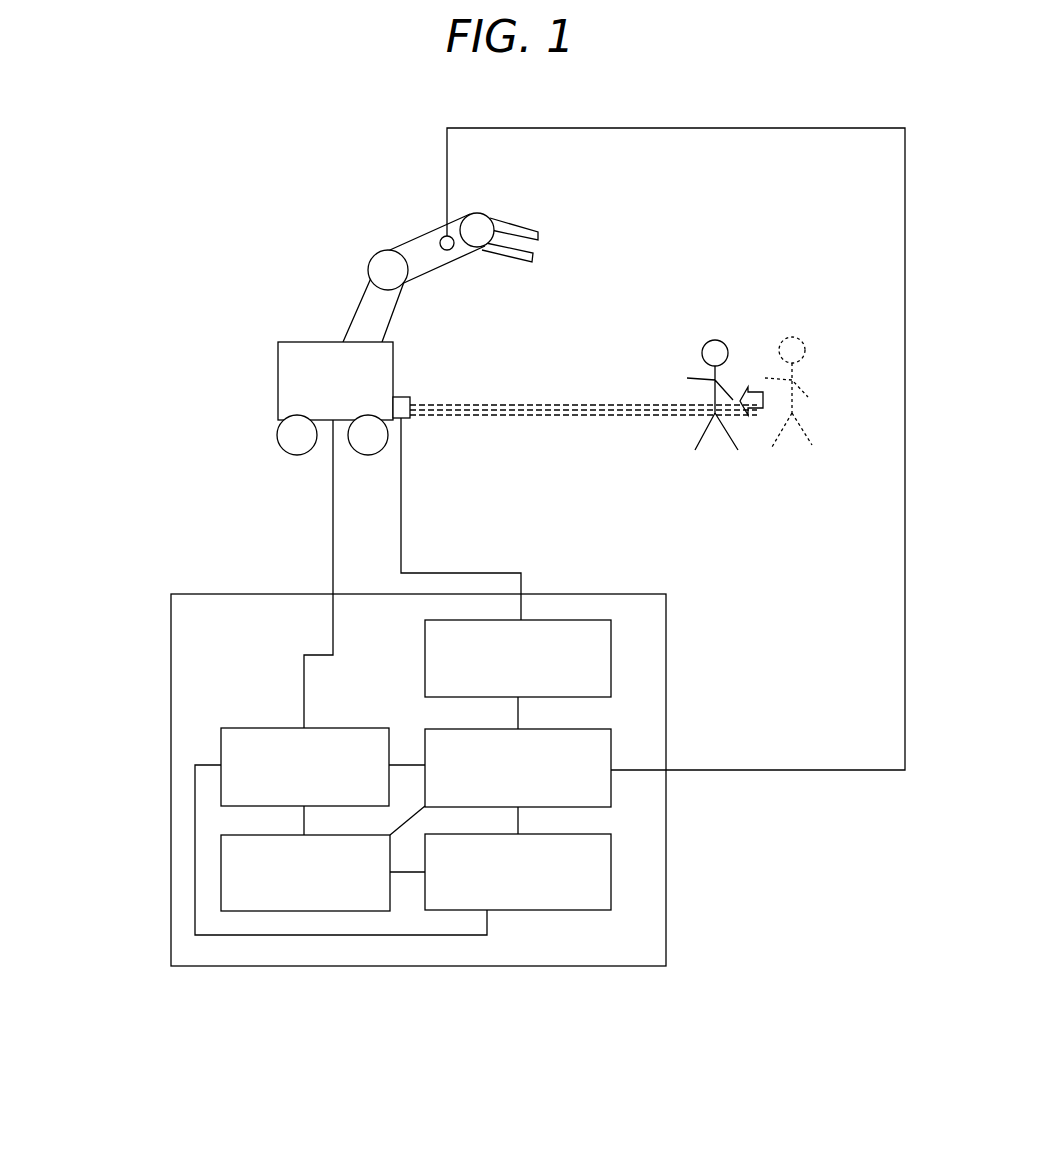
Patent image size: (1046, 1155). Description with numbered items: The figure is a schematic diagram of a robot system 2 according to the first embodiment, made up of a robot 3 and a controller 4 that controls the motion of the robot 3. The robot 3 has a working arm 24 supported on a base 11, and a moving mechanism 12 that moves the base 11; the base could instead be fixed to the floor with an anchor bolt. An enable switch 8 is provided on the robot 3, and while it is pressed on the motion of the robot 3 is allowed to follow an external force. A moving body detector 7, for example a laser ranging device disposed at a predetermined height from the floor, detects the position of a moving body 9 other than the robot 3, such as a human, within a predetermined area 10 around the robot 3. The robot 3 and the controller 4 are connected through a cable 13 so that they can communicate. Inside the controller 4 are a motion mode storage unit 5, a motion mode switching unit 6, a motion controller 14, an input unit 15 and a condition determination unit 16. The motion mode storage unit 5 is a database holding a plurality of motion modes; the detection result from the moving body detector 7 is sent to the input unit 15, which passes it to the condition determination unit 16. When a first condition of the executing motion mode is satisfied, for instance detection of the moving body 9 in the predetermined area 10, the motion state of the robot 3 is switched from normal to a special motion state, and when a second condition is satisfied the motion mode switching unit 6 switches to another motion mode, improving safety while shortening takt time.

The robot system 2 is at (327, 241).
The robot 3 is at (317, 348).
The working arm 24 is at (413, 247).
The enable switch 8 is at (442, 240).
The moving body detector 7 is at (403, 397).
The base 11 is at (303, 393).
The moving mechanism 12 is at (297, 436).
The cable 13 is at (333, 492).
The moving body 9 is at (718, 372).
The predetermined area 10 is at (753, 466).
The controller 4 is at (263, 593).
The motion controller 14 is at (221, 746).
The input unit 15 is at (611, 642).
The condition determination unit 16 is at (611, 752).
The motion mode storage unit 5 is at (221, 855).
The motion mode switching unit 6 is at (611, 865).